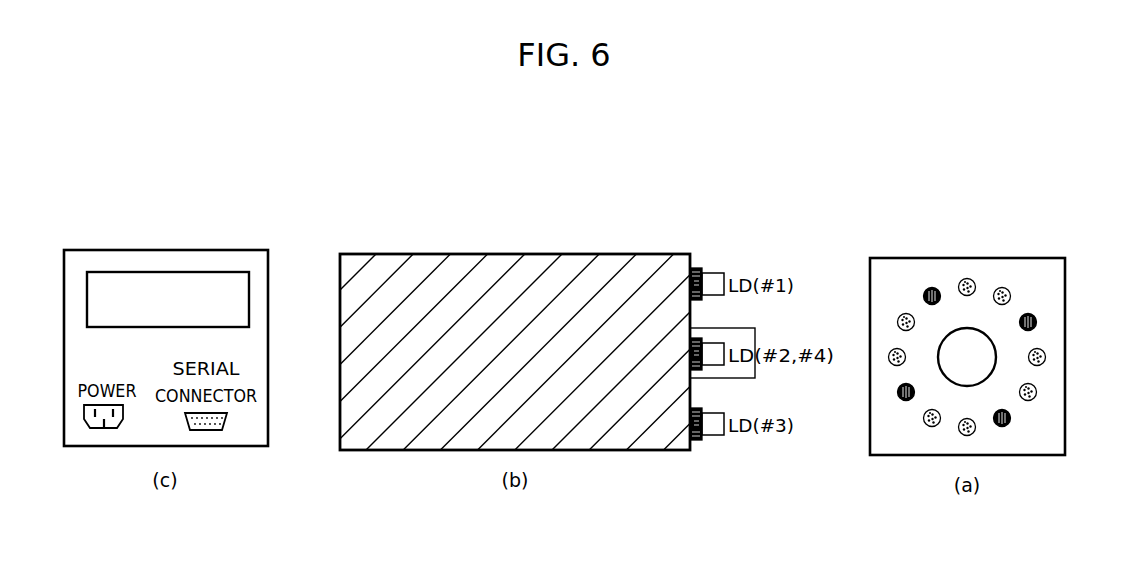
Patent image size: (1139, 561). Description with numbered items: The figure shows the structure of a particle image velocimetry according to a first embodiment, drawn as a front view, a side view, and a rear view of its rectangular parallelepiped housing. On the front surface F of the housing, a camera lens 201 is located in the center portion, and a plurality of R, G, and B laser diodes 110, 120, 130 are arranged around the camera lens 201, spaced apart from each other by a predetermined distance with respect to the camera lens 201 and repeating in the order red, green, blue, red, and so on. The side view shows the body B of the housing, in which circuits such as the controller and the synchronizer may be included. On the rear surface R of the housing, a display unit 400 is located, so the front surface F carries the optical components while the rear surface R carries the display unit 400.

The display unit 400 is at (168, 278).
The rear surface R is at (245, 256).
The body B is at (517, 262).
The camera lens 201 is at (747, 378).
The B laser diode 130 is at (930, 287).
The G laser diode 120 is at (967, 278).
The R laser diode 110 is at (1005, 287).
The front surface F is at (1055, 358).